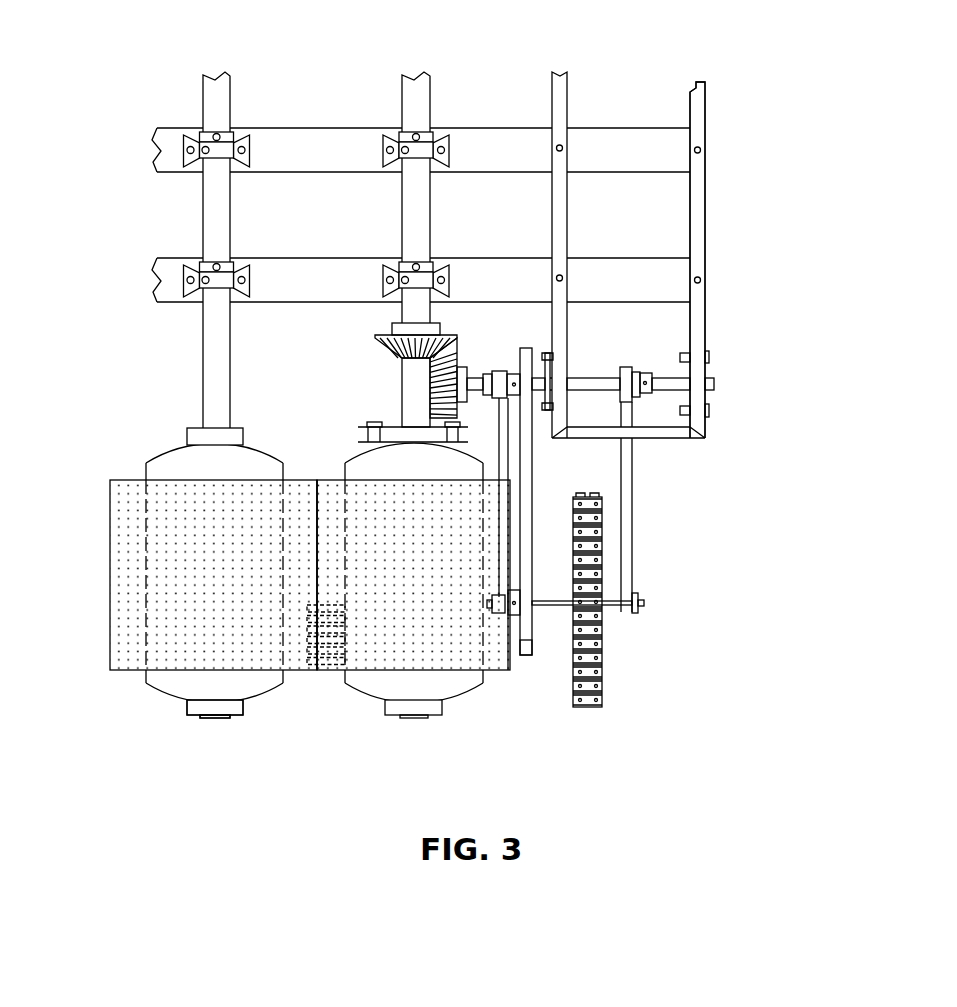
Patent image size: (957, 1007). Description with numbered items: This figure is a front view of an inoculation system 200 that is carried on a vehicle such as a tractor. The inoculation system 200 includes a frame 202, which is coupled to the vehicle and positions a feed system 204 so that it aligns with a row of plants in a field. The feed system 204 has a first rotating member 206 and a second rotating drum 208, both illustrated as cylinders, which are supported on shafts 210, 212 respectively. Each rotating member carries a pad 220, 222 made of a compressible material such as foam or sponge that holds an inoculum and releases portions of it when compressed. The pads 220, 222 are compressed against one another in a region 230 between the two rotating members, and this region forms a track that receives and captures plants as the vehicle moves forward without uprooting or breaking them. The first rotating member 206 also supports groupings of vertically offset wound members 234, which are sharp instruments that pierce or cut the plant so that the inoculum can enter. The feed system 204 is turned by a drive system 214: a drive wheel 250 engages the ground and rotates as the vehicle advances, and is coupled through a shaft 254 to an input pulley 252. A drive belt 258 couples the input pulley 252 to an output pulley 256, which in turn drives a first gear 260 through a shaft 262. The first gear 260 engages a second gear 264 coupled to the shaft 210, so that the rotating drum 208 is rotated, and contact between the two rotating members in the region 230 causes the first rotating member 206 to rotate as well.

The inoculation system 200 is at (730, 78).
The frame 202 is at (488, 127).
The feed system 204 is at (107, 756).
The first rotating member 206 is at (172, 727).
The second rotating drum 208 is at (437, 738).
The shaft 210 is at (417, 212).
The shaft 212 is at (218, 348).
The drive system 214 is at (685, 542).
The pad 220 is at (127, 670).
The pad 222 is at (498, 672).
The region 230 is at (322, 462).
The wound members 234 is at (327, 670).
The drive wheel 250 is at (618, 673).
The input pulley 252 is at (535, 642).
The shaft 254 is at (608, 605).
The output pulley 256 is at (517, 360).
The drive belt 258 is at (525, 463).
The first gear 260 is at (462, 343).
The shaft 262 is at (588, 375).
The second gear 264 is at (376, 335).